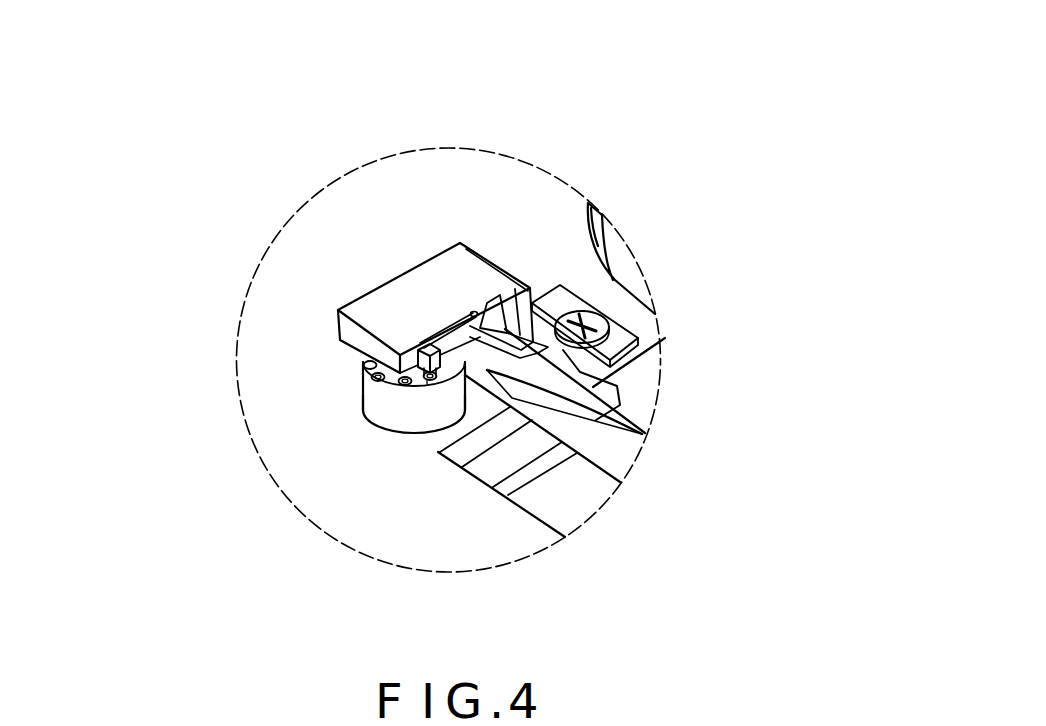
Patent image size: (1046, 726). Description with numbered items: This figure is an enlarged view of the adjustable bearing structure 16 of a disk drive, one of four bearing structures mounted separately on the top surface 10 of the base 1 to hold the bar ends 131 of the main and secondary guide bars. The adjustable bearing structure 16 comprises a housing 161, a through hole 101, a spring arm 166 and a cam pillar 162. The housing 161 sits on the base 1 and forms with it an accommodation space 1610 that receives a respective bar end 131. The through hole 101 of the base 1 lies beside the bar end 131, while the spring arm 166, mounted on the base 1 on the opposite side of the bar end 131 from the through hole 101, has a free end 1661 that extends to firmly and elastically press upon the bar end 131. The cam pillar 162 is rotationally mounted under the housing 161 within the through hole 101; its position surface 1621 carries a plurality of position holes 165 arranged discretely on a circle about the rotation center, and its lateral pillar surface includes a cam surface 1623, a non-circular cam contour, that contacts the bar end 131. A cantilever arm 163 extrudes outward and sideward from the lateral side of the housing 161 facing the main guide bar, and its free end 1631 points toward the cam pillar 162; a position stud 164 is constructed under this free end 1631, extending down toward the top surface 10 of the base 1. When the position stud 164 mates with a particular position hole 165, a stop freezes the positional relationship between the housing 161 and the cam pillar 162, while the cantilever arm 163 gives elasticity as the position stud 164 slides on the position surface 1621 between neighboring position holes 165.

The base 1 is at (457, 537).
The top surface 10 is at (443, 209).
The through hole 101 is at (430, 377).
The bar end 131 is at (582, 437).
The adjustable bearing structure 16 is at (550, 168).
The housing 161 is at (413, 302).
The accommodation space 1610 is at (643, 433).
The cam pillar 162 is at (385, 408).
The position surface 1621 is at (365, 369).
The cam surface 1623 is at (388, 418).
The cantilever arm 163 is at (468, 315).
The free end 1631 is at (348, 306).
The position stud 164 is at (405, 381).
The position holes 165 is at (363, 394).
The spring arm 166 is at (620, 327).
The free end 1661 is at (582, 362).